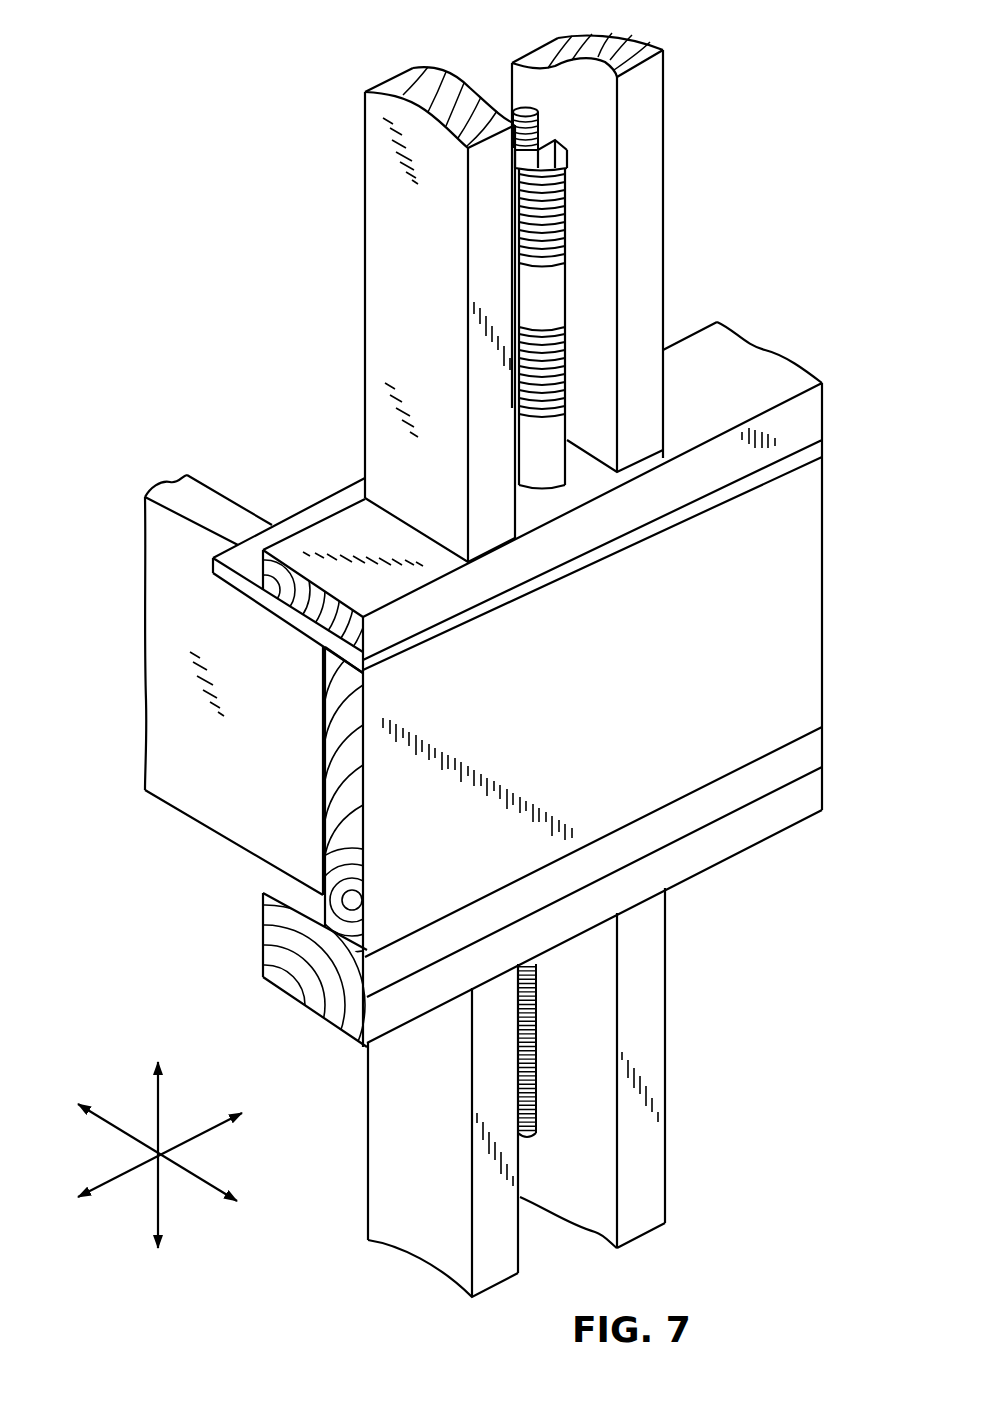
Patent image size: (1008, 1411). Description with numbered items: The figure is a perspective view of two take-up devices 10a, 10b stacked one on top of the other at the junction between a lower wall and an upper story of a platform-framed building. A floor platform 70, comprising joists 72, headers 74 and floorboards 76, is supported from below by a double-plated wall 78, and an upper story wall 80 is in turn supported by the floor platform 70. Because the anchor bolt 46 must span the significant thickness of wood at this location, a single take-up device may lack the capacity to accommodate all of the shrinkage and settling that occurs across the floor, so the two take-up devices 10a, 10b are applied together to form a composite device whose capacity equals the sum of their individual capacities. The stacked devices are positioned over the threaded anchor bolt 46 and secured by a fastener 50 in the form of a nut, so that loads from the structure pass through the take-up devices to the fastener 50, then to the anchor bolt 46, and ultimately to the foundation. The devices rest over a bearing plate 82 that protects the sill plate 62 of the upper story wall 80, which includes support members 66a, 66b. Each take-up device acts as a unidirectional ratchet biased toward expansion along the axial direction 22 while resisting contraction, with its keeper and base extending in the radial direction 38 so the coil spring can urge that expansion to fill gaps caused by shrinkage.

The take-up device 10a is at (570, 416).
The take-up device 10b is at (569, 234).
The axial direction 22 is at (158, 1100).
The radial direction 38 is at (225, 1123).
The anchor bolt 46 is at (528, 105).
The fastener 50 is at (545, 135).
The sill plate 62 is at (753, 350).
The support member 66a is at (373, 258).
The support member 66b is at (658, 85).
The floor platform 70 is at (164, 834).
The joist 72 is at (150, 597).
The header 74 is at (812, 592).
The floorboard 76 is at (327, 507).
The double-plated wall 78 is at (733, 966).
The upper story wall 80 is at (714, 126).
The bearing plate 82 is at (588, 489).